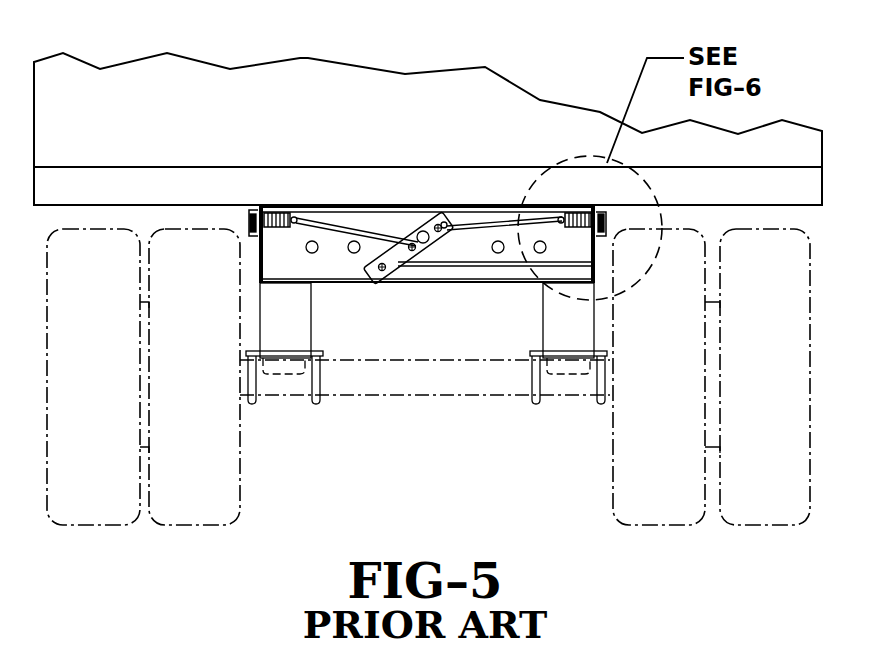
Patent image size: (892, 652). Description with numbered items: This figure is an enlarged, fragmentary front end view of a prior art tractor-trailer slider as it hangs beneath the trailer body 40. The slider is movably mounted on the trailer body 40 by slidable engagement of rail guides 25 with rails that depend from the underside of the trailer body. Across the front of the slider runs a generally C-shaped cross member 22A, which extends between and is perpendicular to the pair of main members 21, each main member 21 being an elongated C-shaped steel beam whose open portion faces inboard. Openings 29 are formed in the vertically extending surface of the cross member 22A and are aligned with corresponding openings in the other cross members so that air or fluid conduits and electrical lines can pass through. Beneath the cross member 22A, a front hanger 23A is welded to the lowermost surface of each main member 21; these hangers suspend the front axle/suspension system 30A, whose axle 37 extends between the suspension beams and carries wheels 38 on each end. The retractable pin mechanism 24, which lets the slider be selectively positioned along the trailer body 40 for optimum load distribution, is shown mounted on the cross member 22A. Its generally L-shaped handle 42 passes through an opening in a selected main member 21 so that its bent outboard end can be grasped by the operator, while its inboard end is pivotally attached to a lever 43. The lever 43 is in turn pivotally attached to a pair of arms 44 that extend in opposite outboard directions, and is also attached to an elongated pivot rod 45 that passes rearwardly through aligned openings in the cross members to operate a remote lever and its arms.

The trailer body 40 is at (262, 112).
The main member 21 is at (582, 252).
The rail guide 25 is at (250, 222).
The opening 29 is at (312, 241).
The arm 44 is at (340, 222).
The lever 43 is at (400, 258).
The pivot rod 45 is at (422, 231).
The retractable pin mechanism 24 is at (445, 215).
The handle 42 is at (602, 267).
The cross member 22A is at (345, 275).
The front hanger 23A is at (279, 347).
The axle 37 is at (490, 398).
The front axle/suspension system 30A is at (403, 406).
The wheel 38 is at (114, 378).